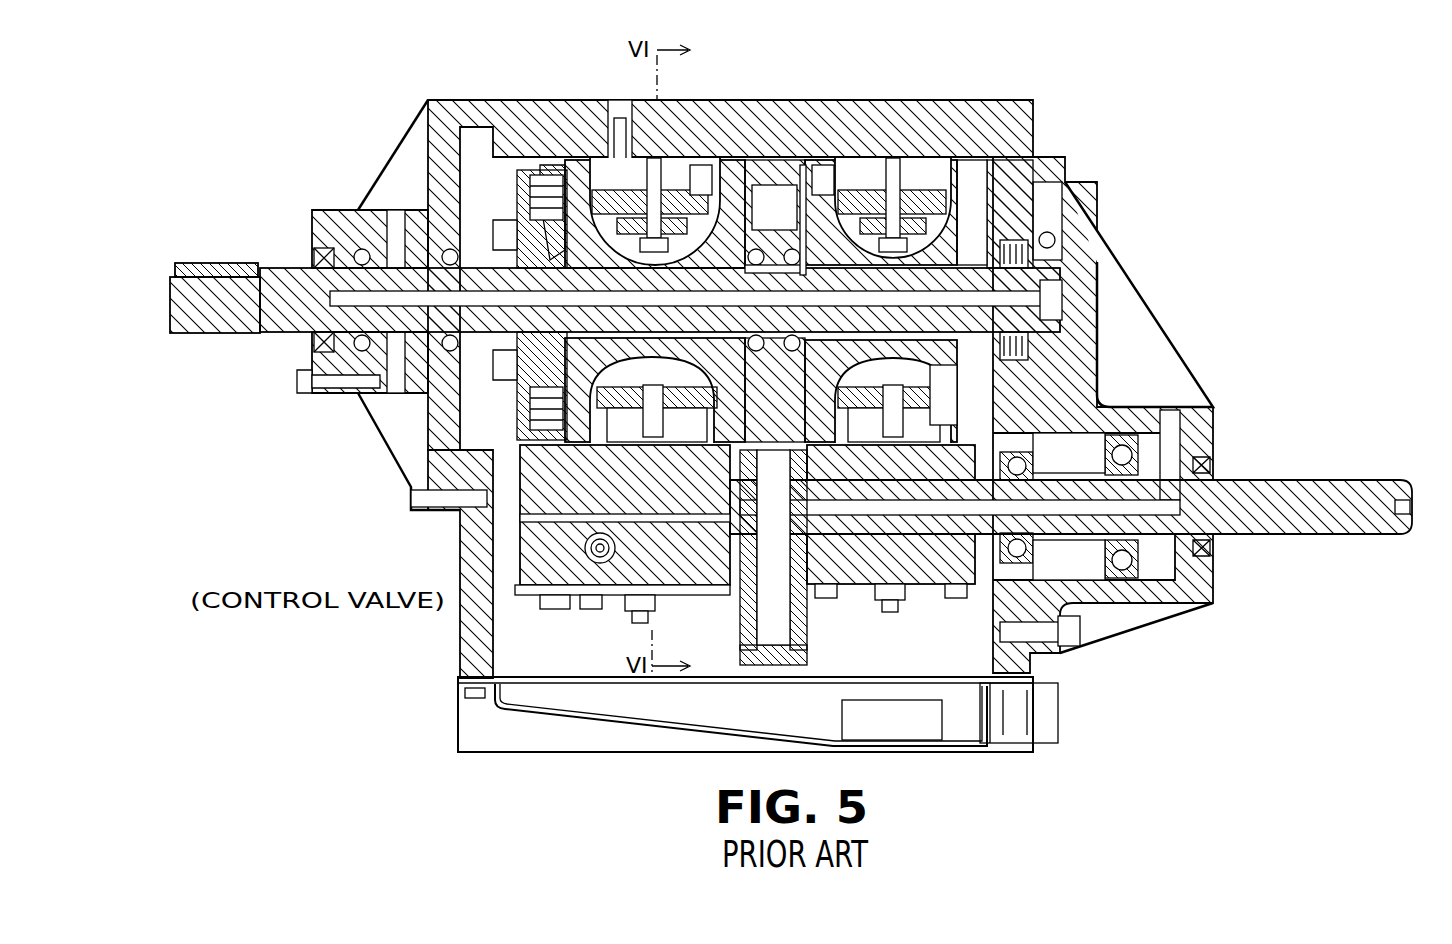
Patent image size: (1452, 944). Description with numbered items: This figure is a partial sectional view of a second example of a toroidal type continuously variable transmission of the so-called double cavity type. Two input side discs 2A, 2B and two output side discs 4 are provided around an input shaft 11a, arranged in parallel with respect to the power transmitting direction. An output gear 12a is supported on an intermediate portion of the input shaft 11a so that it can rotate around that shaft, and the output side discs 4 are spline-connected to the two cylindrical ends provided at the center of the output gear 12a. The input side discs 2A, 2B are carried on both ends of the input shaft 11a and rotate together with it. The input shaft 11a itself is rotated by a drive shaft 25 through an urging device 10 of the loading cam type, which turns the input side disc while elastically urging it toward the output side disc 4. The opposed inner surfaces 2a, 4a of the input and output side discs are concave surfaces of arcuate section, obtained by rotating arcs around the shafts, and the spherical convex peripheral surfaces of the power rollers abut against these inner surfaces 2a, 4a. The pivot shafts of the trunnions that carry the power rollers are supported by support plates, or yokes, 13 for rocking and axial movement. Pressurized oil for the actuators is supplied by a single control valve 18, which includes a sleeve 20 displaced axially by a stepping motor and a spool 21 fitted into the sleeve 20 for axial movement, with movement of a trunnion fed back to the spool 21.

The input side disc 2A is at (572, 168).
The input side disc 2B is at (974, 180).
The inner surface of input side disc 2a is at (590, 178).
The output side disc 4 is at (775, 165).
The inner surface of output side disc 4a is at (722, 280).
The urging device 10 is at (538, 180).
The input shaft 11a is at (742, 290).
The output gear 12a is at (778, 215).
The support plate (yoke) 13 is at (700, 178).
The control valve 18 is at (578, 538).
The sleeve 20 is at (587, 592).
The spool 21 is at (543, 590).
The drive shaft 25 is at (273, 284).